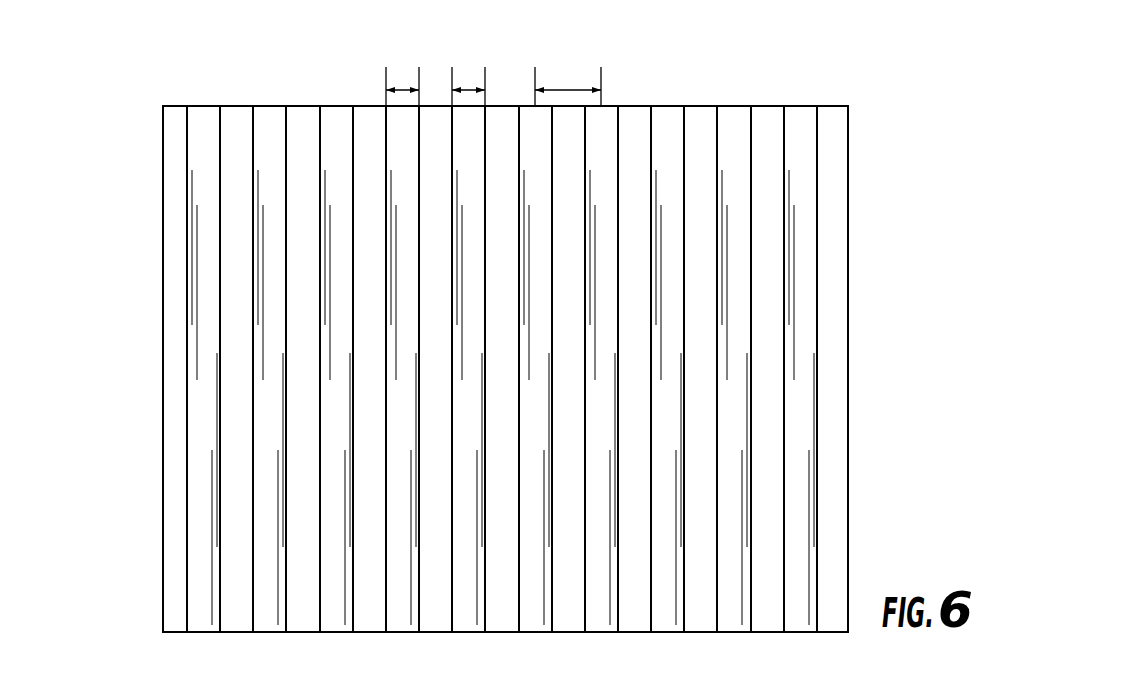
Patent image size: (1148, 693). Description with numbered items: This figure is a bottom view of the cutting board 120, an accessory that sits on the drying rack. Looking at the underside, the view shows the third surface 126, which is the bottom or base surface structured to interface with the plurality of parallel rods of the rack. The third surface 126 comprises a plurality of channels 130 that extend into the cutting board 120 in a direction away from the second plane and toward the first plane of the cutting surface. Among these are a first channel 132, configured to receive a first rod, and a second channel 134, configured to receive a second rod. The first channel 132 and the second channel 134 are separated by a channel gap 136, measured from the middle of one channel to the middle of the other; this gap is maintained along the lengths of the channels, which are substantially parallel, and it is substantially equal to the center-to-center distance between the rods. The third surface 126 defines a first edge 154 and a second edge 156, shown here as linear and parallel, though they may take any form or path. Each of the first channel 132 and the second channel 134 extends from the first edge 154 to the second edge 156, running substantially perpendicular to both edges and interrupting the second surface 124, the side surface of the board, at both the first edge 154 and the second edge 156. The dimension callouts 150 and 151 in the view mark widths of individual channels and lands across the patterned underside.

The cutting board 120 is at (128, 58).
The second surface 124 is at (697, 106).
The third surface 126 is at (835, 263).
The channels 130 is at (165, 303).
The first channel 132 is at (376, 116).
The second channel 134 is at (500, 112).
The channel gap 136 is at (575, 88).
The wall width 150 is at (405, 88).
The gap width 151 is at (472, 88).
The first edge 154 is at (830, 106).
The second edge 156 is at (830, 633).